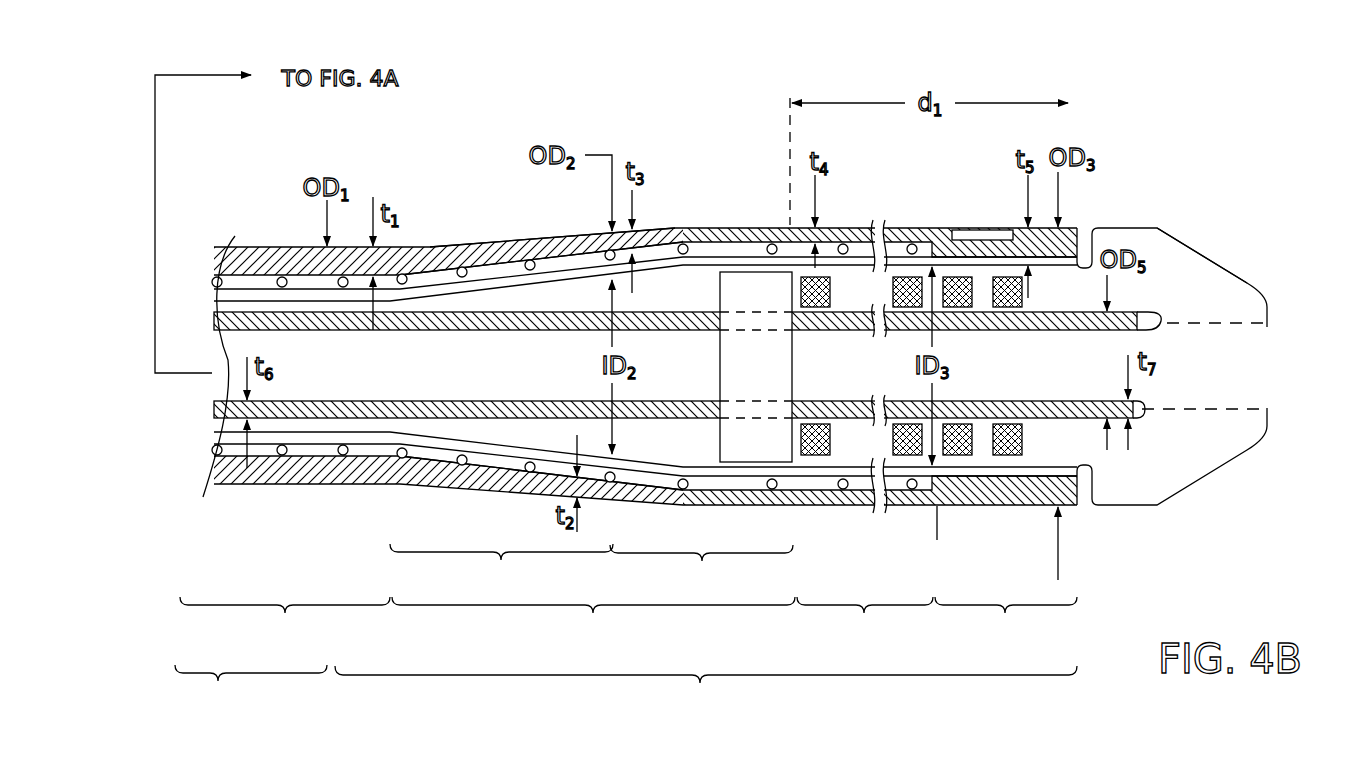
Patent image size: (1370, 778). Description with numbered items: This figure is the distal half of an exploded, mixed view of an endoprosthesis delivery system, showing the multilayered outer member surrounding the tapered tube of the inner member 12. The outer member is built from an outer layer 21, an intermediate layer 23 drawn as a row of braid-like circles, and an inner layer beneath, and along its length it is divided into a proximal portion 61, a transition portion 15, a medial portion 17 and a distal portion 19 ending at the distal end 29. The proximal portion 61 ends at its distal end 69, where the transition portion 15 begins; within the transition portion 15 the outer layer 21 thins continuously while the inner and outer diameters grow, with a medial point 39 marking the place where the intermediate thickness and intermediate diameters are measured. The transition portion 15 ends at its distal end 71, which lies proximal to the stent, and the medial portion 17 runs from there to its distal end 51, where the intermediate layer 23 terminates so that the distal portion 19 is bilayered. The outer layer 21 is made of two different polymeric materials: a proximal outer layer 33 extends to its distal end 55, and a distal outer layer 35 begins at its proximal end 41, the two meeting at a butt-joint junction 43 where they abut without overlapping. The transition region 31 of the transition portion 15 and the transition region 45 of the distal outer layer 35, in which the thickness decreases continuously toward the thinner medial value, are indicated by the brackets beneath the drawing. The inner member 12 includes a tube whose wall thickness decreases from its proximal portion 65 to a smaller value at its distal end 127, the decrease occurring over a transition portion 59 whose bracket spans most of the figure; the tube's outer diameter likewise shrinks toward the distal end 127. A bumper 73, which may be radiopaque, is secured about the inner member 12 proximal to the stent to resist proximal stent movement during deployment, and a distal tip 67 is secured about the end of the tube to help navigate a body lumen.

The inner member 12 is at (208, 472).
The transition portion 15 is at (593, 624).
The medial portion 17 is at (865, 622).
The distal portion 19 is at (1006, 622).
The outer layer 21 is at (300, 252).
The intermediate layer 23 is at (281, 276).
The distal end 29 is at (1082, 228).
The transition region 31 is at (501, 570).
The proximal outer layer 33 is at (462, 491).
The distal outer layer 35 is at (690, 229).
The medial point 39 is at (555, 492).
The proximal end 41 is at (653, 237).
The junction 43 is at (602, 240).
The transition region 45 is at (701, 571).
The distal end 51 is at (938, 538).
The distal end 55 is at (592, 254).
The transition portion 59 is at (706, 698).
The proximal portion 61 is at (285, 624).
The proximal portion 65 is at (251, 692).
The distal tip 67 is at (1233, 261).
The distal end 69 is at (320, 488).
The distal end 71 is at (790, 506).
The bumper 73 is at (747, 305).
The distal end 127 is at (1152, 318).